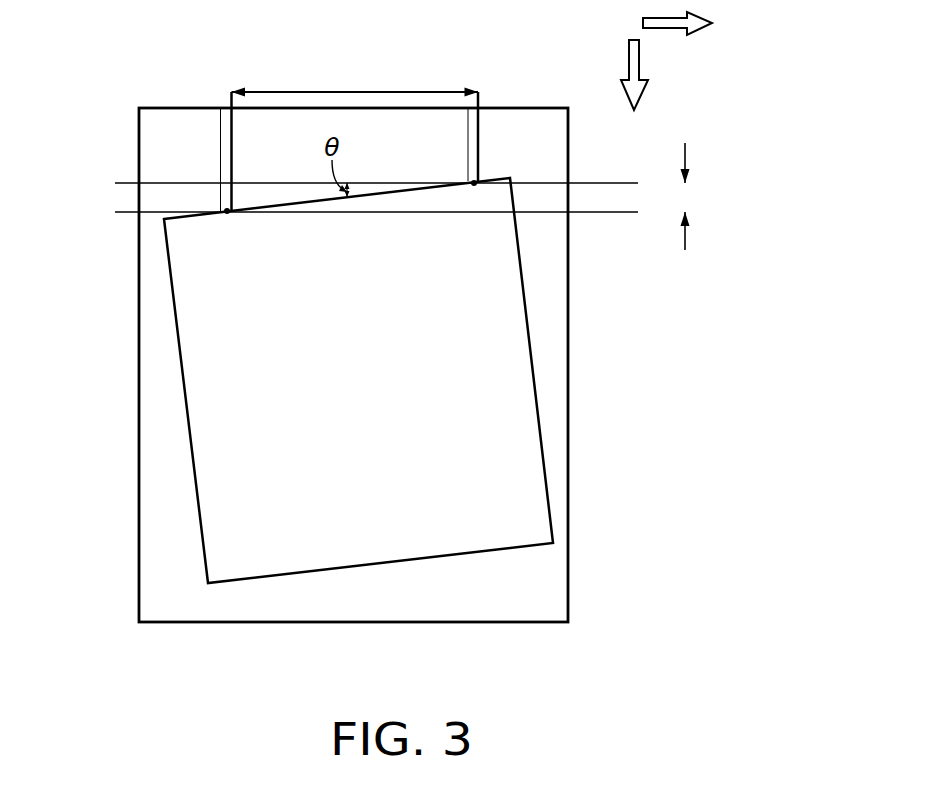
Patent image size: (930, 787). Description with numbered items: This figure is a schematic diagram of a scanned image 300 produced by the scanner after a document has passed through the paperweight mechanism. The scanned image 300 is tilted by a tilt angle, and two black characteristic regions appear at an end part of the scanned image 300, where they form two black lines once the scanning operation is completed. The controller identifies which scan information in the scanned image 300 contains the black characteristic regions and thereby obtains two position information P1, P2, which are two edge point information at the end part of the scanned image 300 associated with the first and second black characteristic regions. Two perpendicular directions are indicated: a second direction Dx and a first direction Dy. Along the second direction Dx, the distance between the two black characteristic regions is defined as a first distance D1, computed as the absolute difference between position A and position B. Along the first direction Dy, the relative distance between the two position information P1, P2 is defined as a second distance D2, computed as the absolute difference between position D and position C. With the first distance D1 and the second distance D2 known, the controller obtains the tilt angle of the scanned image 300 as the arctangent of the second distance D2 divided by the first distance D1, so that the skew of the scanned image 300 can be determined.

The scanned image 300 is at (568, 392).
The position A is at (231, 132).
The position B is at (477, 116).
The position C is at (389, 184).
The position D is at (390, 213).
The first distance D1 is at (355, 77).
The second distance D2 is at (703, 196).
The first position information P1 is at (228, 220).
The second position information P2 is at (474, 193).
The second direction Dx is at (696, 23).
The first direction Dy is at (634, 93).